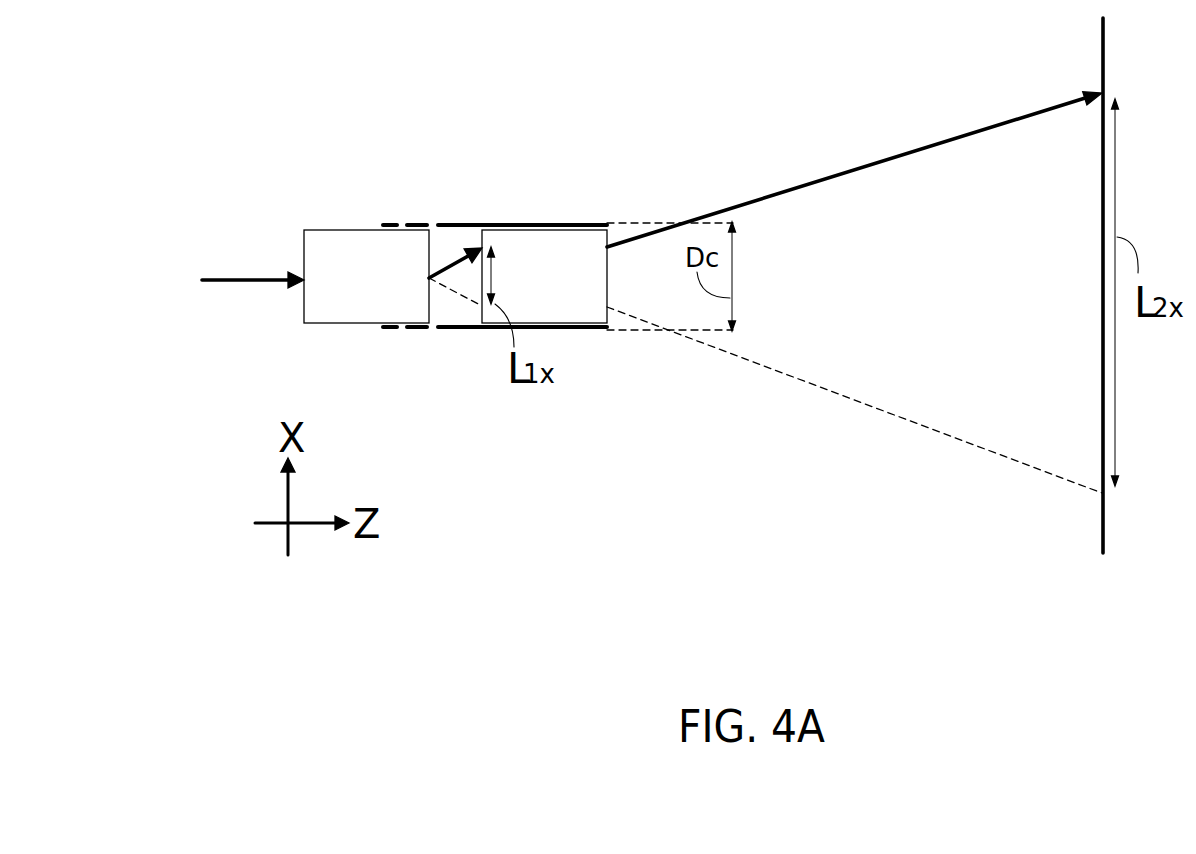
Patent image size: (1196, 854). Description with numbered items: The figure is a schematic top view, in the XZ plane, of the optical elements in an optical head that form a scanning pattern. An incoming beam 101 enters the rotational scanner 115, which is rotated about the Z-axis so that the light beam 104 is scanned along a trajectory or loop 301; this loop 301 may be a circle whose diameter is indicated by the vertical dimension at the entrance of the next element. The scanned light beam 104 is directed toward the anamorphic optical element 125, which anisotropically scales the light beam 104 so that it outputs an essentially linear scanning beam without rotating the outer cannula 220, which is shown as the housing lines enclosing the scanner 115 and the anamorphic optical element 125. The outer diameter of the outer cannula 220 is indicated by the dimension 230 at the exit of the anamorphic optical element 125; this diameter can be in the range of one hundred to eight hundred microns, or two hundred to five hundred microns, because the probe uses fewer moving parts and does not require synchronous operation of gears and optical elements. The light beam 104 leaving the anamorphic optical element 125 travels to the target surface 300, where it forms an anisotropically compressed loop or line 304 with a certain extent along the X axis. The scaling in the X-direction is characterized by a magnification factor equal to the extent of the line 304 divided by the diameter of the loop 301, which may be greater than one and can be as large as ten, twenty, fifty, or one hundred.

The input light beam 101 is at (227, 277).
The rotational scanner 115 is at (366, 276).
The outer cannula 220 is at (442, 329).
The anamorphic optical element 125 is at (544, 276).
The trajectory or loop 301 is at (493, 269).
The clear aperture (Dc) 230 is at (733, 315).
The light beam 104 is at (790, 187).
The target surface 300 is at (1100, 67).
The anisotropically compressed loop or line 304 is at (1117, 208).